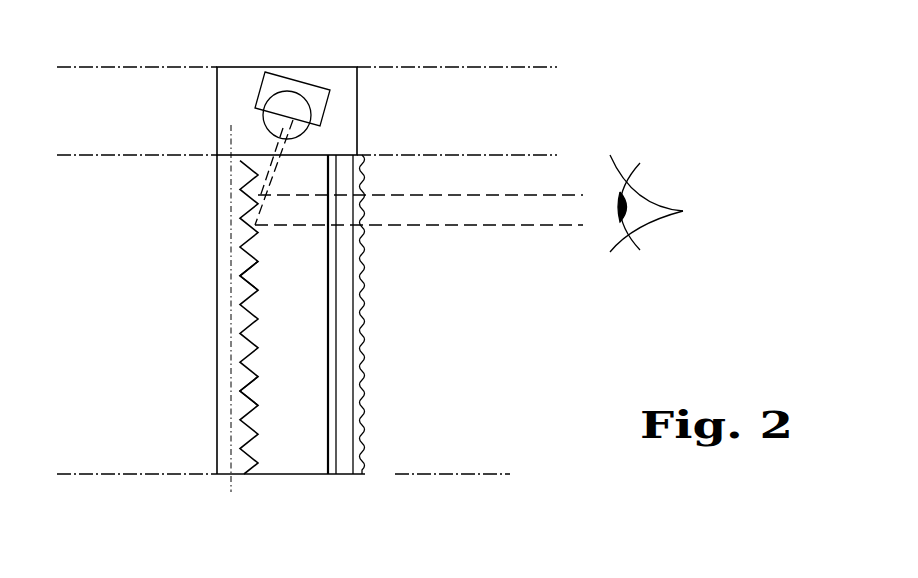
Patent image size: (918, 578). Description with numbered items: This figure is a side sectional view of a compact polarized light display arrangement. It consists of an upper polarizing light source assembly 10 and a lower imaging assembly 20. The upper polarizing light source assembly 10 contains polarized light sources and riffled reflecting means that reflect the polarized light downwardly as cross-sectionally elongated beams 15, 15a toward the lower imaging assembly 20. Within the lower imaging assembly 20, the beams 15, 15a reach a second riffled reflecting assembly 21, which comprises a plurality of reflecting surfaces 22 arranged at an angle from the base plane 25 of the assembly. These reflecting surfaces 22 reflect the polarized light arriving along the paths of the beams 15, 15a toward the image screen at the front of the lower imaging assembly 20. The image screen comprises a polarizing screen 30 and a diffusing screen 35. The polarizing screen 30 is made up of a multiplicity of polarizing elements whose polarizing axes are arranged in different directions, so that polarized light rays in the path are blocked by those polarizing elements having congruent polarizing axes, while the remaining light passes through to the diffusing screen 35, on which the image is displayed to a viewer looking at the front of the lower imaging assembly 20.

The upper polarizing light source assembly 10 is at (373, 120).
The cross-sectionally elongated beam 15 is at (275, 150).
The cross-sectionally elongated beam 15a is at (262, 158).
The lower imaging assembly 20 is at (207, 400).
The second riffled reflecting assembly 21 is at (240, 287).
The reflecting surfaces 22 is at (255, 288).
The base plane 25 is at (231, 368).
The polarizing screen 30 is at (332, 452).
The diffusing screen 35 is at (365, 352).